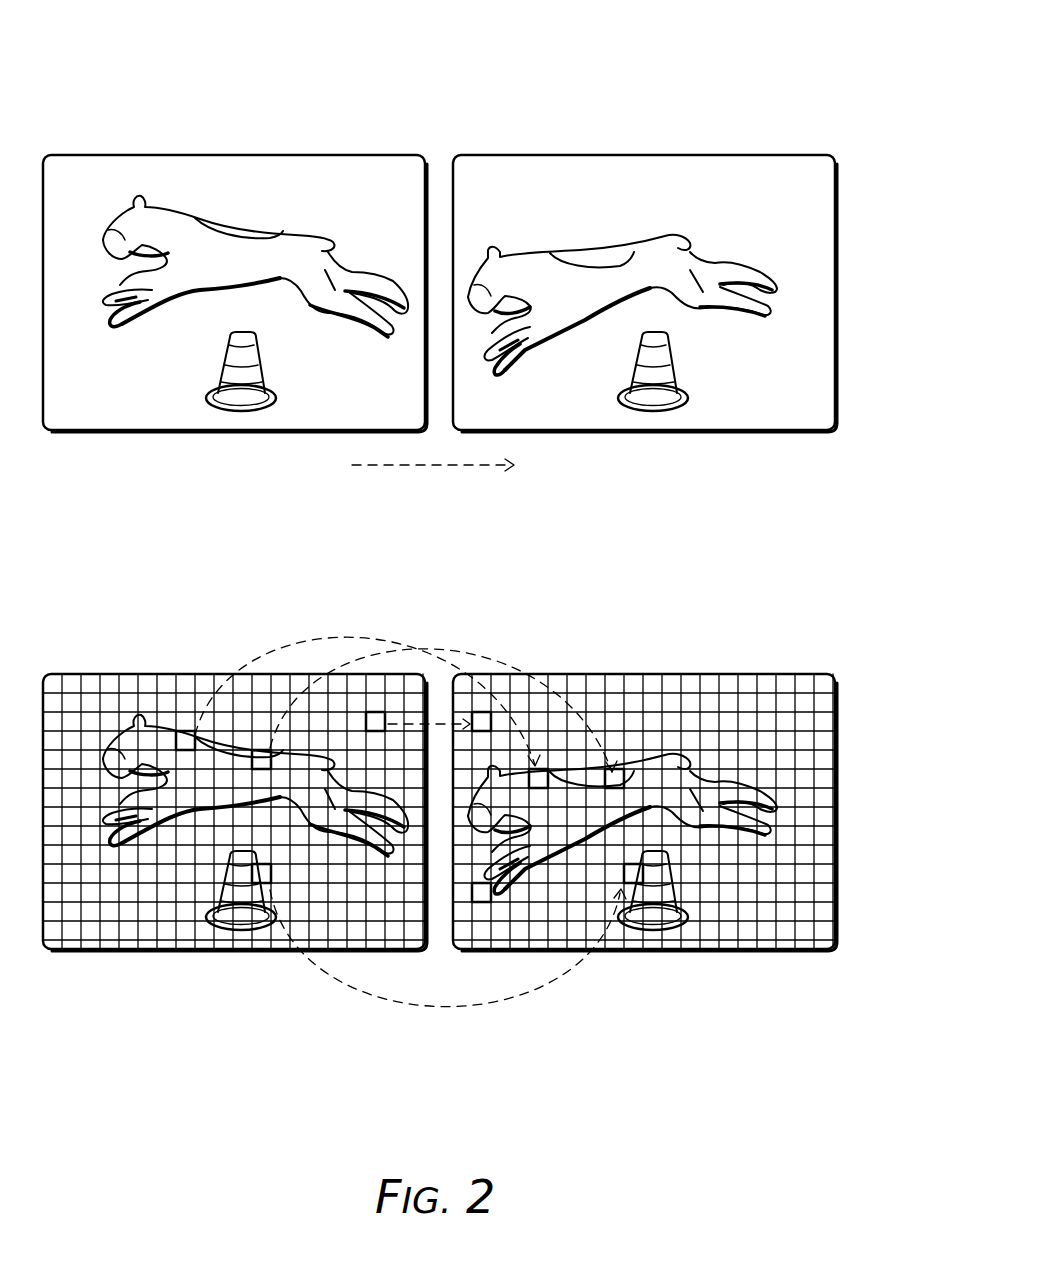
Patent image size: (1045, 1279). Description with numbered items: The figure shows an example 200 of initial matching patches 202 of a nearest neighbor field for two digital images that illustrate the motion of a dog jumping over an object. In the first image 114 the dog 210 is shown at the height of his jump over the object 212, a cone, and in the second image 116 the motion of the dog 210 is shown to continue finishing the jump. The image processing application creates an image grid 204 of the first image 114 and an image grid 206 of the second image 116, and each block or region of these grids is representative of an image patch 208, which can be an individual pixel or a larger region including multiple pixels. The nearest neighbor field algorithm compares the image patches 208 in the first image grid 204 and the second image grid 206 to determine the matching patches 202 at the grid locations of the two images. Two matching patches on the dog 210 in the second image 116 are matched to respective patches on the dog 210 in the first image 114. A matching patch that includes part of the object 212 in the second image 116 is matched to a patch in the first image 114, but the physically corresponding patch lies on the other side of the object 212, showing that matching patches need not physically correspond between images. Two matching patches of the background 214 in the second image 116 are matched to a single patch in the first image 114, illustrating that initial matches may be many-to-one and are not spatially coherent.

The example of matching patches 200 is at (641, 66).
The first image 114 is at (283, 474).
The second image 116 is at (707, 474).
The dog 210 is at (268, 227).
The object 212 is at (272, 377).
The background 214 is at (103, 403).
The matching patches 202 is at (520, 613).
The image grid of the first image 204 is at (93, 706).
The image grid of the second image 206 is at (695, 705).
The image patches 208 is at (188, 702).